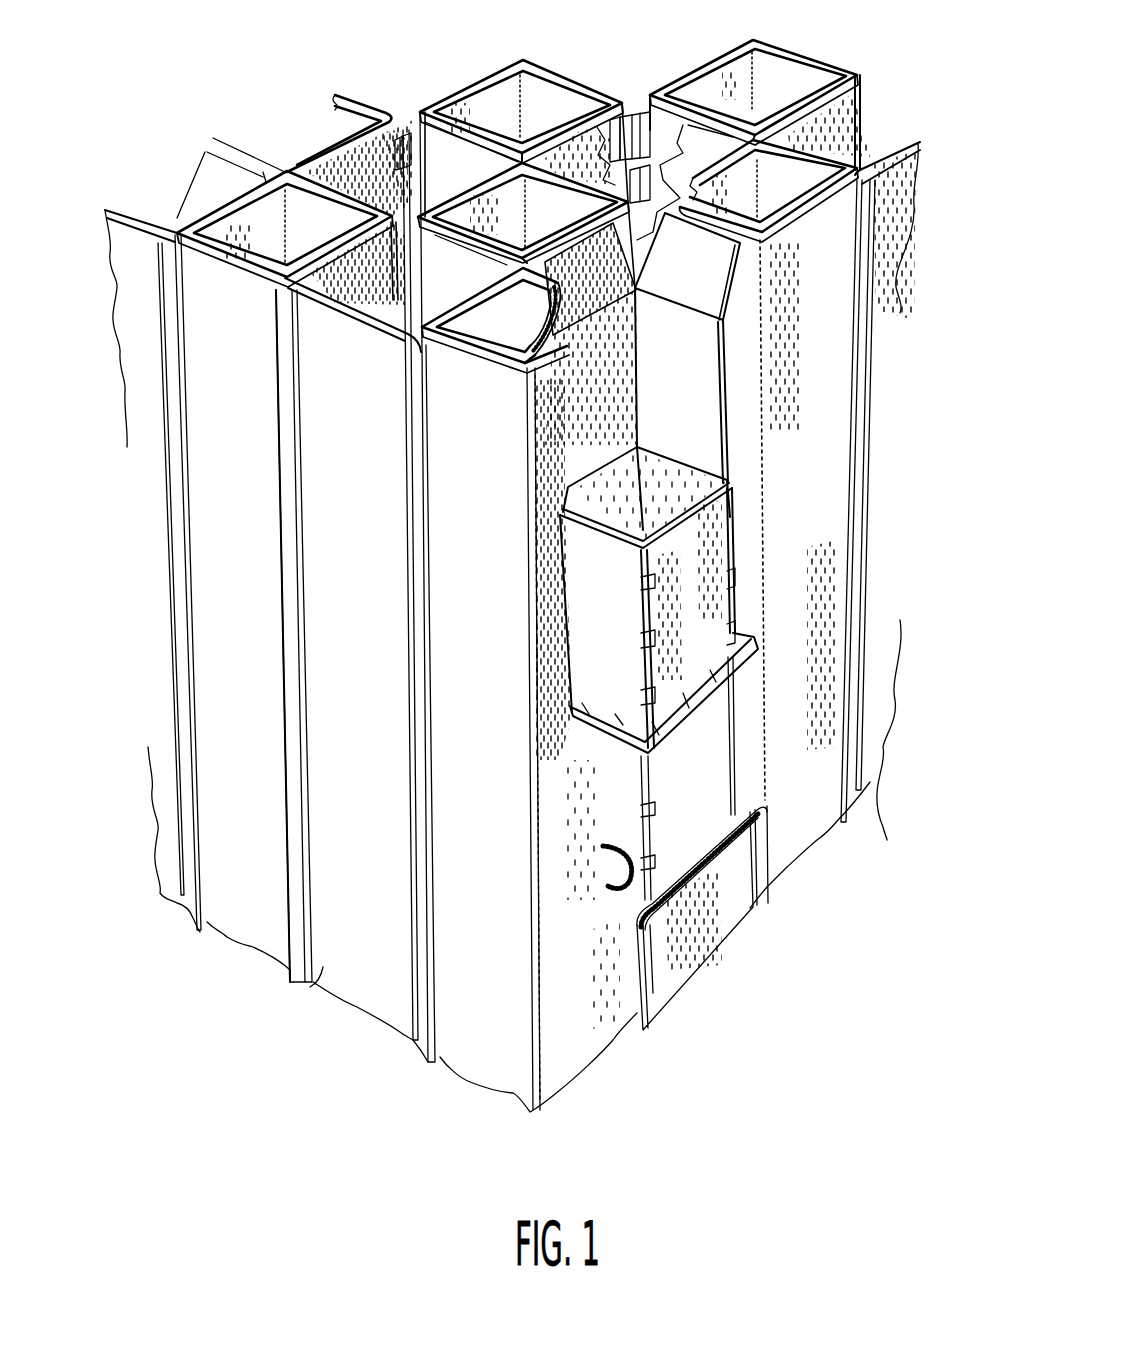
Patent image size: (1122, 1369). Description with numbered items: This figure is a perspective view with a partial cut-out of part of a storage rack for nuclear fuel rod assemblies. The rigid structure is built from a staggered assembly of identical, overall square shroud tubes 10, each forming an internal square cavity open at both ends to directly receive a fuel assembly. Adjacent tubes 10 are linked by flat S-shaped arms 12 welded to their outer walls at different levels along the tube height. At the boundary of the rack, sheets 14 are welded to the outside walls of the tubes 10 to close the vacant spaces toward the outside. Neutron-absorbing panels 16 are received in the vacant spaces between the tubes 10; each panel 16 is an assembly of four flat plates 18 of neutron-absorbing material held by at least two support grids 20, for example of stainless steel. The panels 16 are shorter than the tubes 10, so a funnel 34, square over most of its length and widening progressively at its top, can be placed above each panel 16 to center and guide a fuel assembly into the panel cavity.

The shroud tube 10 is at (236, 191).
The S-shaped arm 12 is at (410, 153).
The sheet 14 is at (187, 870).
The neutron-absorbing panel 16 is at (752, 555).
The flat plate 18 is at (683, 608).
The support grid 20 is at (755, 665).
The funnel 34 is at (597, 375).